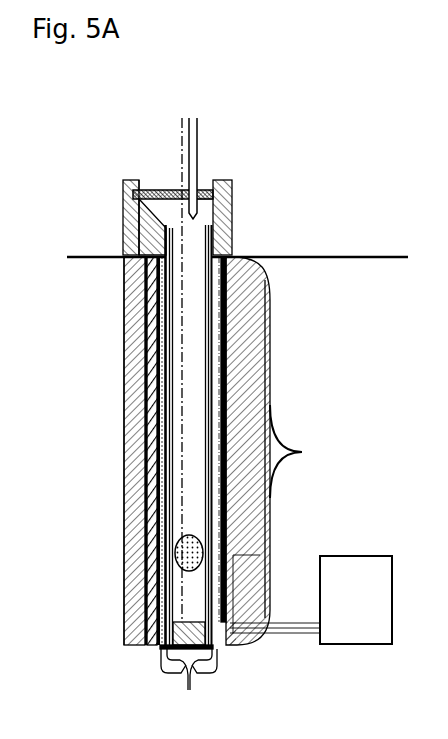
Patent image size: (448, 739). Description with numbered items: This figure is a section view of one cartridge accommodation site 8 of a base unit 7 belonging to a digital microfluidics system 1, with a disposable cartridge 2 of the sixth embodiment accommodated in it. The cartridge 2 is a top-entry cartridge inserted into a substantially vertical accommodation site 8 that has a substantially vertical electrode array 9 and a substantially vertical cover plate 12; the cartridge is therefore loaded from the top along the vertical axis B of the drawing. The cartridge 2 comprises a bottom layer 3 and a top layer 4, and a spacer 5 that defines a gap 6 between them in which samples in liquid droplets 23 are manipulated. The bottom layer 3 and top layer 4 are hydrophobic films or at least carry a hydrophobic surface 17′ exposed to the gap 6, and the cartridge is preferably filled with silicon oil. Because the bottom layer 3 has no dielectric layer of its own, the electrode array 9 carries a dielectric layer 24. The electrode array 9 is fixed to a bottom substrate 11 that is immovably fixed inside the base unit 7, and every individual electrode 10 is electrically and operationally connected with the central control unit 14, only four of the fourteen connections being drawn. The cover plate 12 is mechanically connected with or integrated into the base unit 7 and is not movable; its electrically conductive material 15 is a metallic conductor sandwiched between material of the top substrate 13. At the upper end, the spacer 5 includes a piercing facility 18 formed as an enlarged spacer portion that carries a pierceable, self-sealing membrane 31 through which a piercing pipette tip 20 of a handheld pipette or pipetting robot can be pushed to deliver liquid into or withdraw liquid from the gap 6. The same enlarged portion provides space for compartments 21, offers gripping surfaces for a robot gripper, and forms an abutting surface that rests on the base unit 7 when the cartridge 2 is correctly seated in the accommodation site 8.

The digital microfluidics system 1 is at (352, 174).
The disposable cartridge 2 is at (255, 215).
The bottom layer 3 is at (265, 448).
The top layer 4 is at (123, 453).
The spacer 5 is at (123, 215).
The gap 6 is at (195, 513).
The base unit 7 is at (84, 260).
The cartridge accommodation site 8 is at (304, 452).
The electrode array 9 is at (248, 426).
The electrode 10 is at (228, 398).
The bottom substrate 11 is at (258, 492).
The cover plate 12 is at (110, 457).
The top substrate 13 is at (124, 497).
The central control unit 14 is at (357, 593).
The electrically conductive material 15 is at (152, 520).
The hydrophobic surface 17′ is at (203, 418).
The piercing facility 18 is at (265, 163).
The piercing pipette tip 20 is at (194, 162).
The compartments 21 is at (203, 215).
The liquid droplets 23 is at (123, 538).
The dielectric layer 24 is at (228, 531).
The pierceable, self-sealing membrane 31 is at (168, 190).
The axis B is at (179, 170).